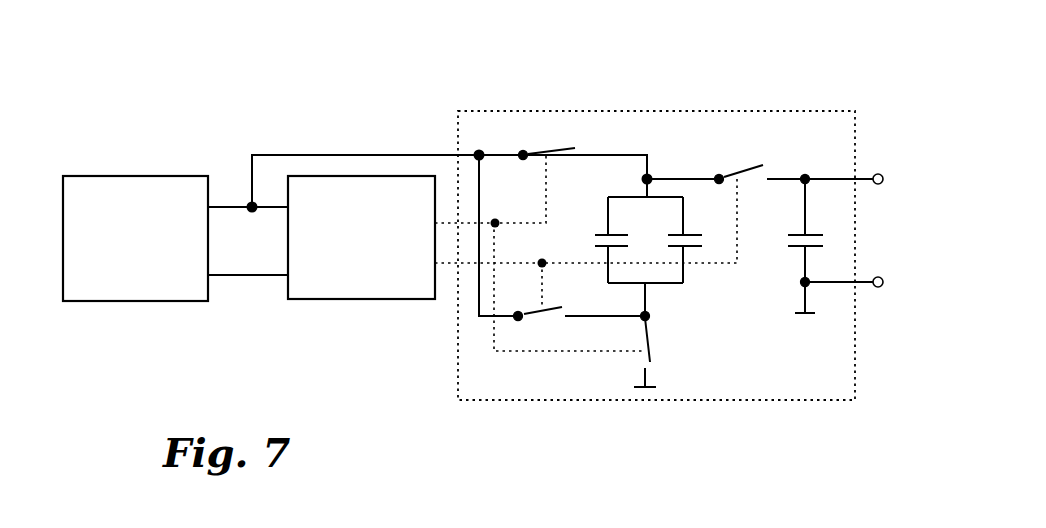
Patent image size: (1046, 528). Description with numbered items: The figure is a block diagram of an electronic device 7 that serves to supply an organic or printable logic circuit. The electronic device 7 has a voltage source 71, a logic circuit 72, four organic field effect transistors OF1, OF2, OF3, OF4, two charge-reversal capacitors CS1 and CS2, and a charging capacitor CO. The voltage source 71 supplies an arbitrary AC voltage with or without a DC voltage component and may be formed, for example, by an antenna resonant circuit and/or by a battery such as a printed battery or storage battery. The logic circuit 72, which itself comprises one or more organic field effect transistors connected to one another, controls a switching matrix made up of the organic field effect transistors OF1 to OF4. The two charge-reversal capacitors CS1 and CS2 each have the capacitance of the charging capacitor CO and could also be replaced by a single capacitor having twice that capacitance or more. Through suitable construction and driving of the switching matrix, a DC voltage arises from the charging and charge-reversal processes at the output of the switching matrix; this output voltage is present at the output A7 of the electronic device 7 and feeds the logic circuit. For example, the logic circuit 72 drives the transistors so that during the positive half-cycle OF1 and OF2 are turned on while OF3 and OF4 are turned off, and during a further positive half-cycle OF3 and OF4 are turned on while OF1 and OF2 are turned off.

The electronic device 7 is at (818, 45).
The voltage source 71 is at (146, 165).
The logic circuit 72 is at (362, 173).
The output A7 is at (878, 185).
The organic field effect transistor OF1 is at (547, 137).
The organic field effect transistor OF2 is at (672, 350).
The organic field effect transistor OF3 is at (546, 330).
The organic field effect transistor OF4 is at (739, 157).
The charge-reversal capacitor CS1 is at (617, 247).
The charge-reversal capacitor CS2 is at (708, 248).
The charging capacitor CO is at (815, 244).